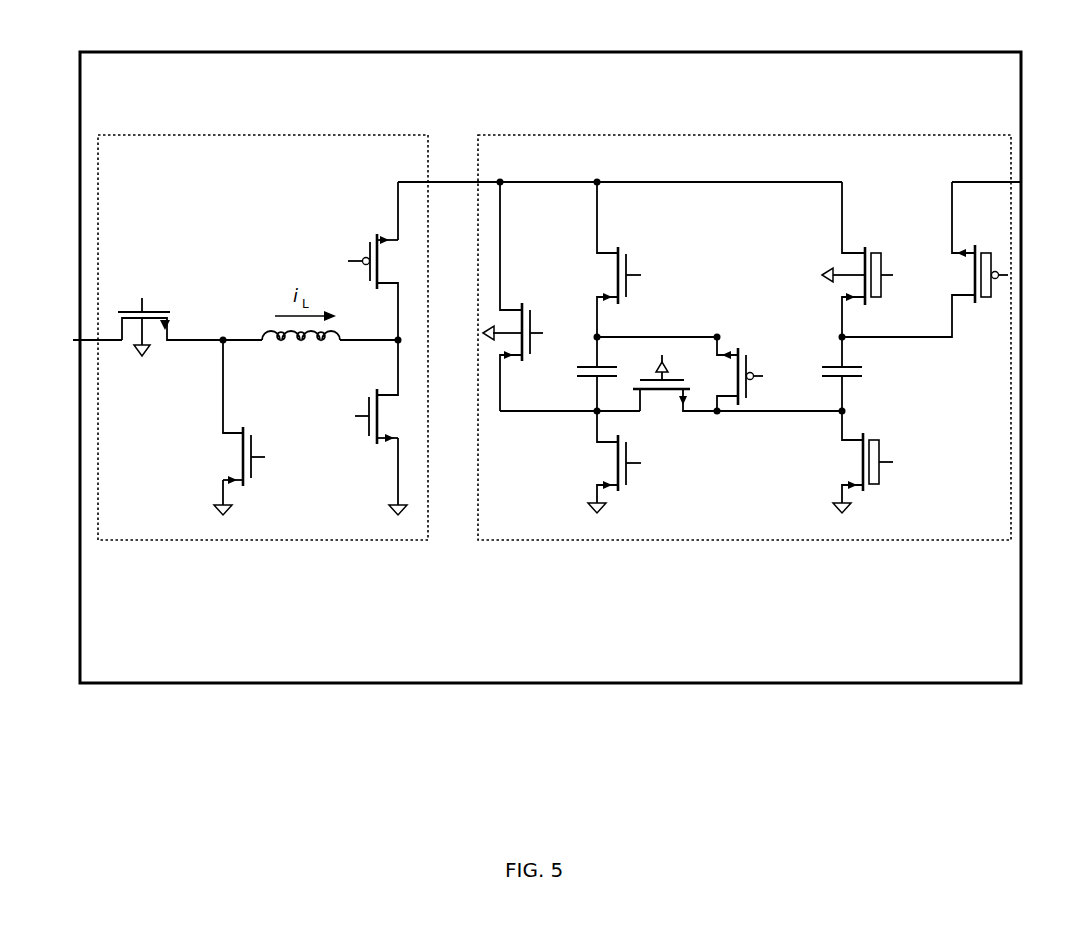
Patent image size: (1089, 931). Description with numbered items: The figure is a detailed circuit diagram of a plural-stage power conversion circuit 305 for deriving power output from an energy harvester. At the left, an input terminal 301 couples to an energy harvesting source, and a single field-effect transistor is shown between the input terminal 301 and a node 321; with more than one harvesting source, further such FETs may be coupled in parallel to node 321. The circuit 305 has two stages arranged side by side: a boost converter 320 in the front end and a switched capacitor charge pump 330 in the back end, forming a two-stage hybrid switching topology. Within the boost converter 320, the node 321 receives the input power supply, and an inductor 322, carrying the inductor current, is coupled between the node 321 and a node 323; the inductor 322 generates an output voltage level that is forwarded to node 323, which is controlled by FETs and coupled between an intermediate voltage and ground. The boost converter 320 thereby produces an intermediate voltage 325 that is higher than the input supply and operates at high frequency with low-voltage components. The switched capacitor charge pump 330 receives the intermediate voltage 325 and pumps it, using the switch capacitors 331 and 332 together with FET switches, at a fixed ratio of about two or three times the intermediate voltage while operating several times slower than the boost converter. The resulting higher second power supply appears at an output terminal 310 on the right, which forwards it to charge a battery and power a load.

The input terminal 301 is at (75, 340).
The plural-stage power conversion circuit 305 is at (592, 52).
The output terminal 310 is at (1021, 182).
The boost converter 320 is at (263, 337).
The node 321 is at (226, 337).
The inductor 322 is at (308, 355).
The node 323 is at (396, 337).
The intermediate voltage 325 is at (450, 182).
The switched capacitor charge pump 330 is at (744, 337).
The capacitor 331 is at (592, 380).
The capacitor 332 is at (845, 378).